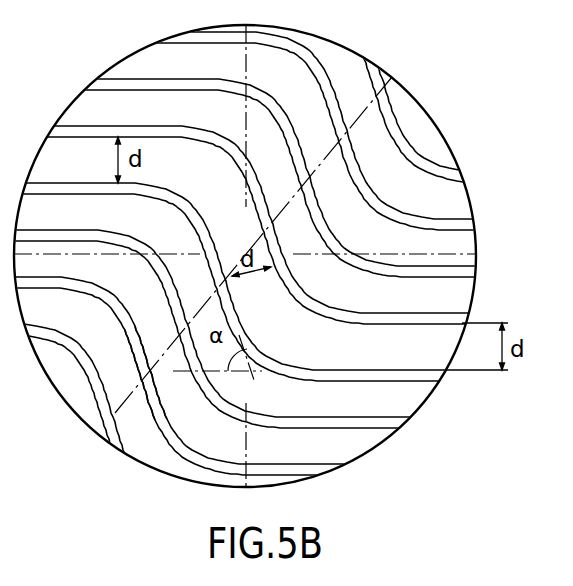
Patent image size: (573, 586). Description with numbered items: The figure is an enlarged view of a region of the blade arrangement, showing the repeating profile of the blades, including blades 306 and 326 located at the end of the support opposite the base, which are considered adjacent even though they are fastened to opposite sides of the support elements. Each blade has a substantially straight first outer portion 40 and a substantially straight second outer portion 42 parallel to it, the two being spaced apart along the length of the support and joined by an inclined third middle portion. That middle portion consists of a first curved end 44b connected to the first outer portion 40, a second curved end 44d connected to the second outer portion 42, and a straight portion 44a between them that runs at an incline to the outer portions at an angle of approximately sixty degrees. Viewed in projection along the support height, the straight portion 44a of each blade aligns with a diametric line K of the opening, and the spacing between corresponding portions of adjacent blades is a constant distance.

The second outer portion 42 is at (84, 138).
The first outer portion 40 is at (407, 324).
The straight portion 44a is at (270, 209).
The first curved end 44b is at (309, 302).
The second curved end 44d is at (204, 221).
The blade 306 is at (451, 312).
The blade 326 is at (408, 382).
The diametric line K is at (325, 161).